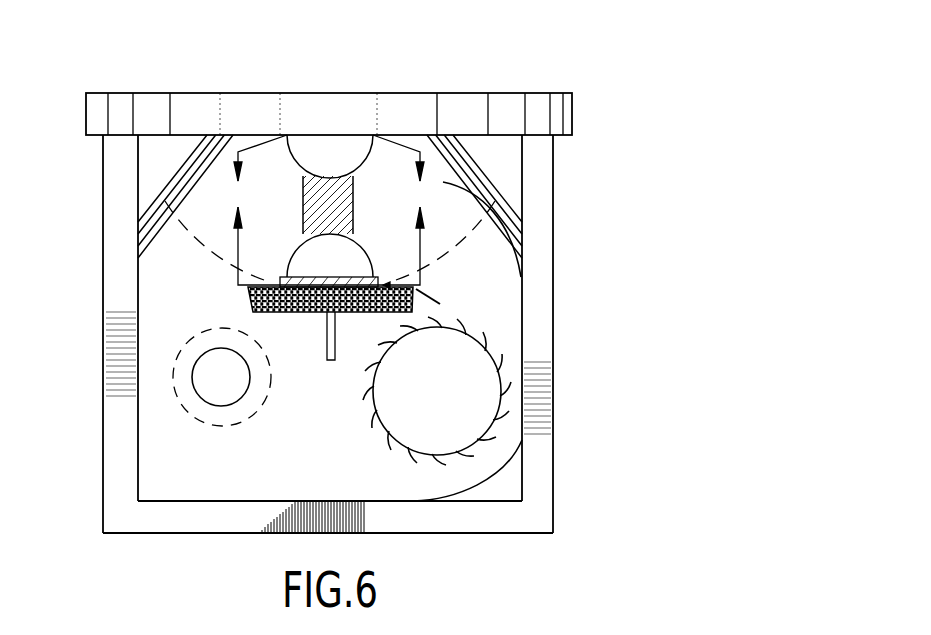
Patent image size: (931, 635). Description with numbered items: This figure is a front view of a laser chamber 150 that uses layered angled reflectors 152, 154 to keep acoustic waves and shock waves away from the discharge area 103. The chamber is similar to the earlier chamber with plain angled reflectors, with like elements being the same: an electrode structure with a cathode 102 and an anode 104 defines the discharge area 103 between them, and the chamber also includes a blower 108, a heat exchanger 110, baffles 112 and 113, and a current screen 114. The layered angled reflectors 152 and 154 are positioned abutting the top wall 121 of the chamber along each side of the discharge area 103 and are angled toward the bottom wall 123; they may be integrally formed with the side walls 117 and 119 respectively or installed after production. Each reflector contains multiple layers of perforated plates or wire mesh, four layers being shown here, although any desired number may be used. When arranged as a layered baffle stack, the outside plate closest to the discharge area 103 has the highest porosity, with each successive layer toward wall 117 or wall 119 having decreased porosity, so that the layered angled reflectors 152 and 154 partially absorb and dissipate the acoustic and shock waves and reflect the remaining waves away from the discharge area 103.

The laser chamber 150 is at (359, 315).
The top wall 121 is at (418, 118).
The wall 117 is at (138, 413).
The wall 119 is at (523, 342).
The bottom wall 123 is at (367, 522).
The layered angled reflector 152 is at (170, 169).
The layered angled reflector 154 is at (490, 176).
The current screen 114 is at (195, 237).
The cathode 102 is at (349, 163).
The discharge area 103 is at (334, 207).
The anode 104 is at (349, 268).
The baffle 113 is at (507, 260).
The baffle 112 is at (467, 485).
The blower 108 is at (454, 402).
The heat exchanger 110 is at (239, 387).